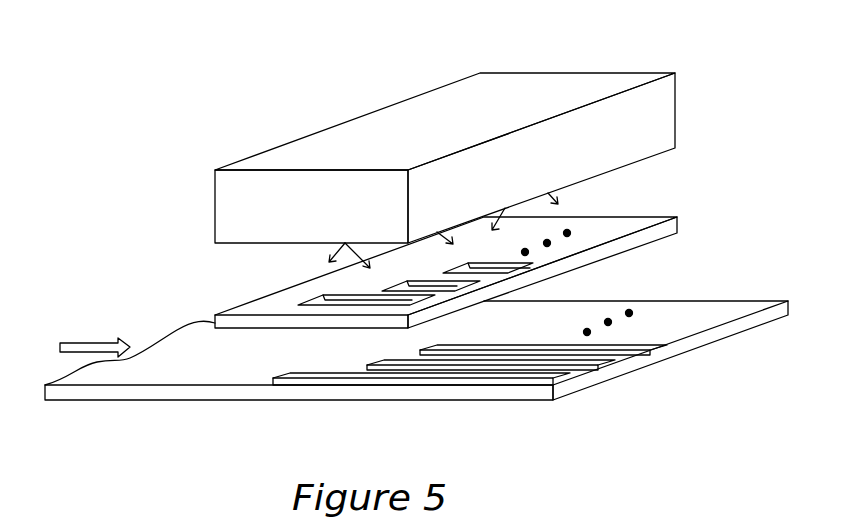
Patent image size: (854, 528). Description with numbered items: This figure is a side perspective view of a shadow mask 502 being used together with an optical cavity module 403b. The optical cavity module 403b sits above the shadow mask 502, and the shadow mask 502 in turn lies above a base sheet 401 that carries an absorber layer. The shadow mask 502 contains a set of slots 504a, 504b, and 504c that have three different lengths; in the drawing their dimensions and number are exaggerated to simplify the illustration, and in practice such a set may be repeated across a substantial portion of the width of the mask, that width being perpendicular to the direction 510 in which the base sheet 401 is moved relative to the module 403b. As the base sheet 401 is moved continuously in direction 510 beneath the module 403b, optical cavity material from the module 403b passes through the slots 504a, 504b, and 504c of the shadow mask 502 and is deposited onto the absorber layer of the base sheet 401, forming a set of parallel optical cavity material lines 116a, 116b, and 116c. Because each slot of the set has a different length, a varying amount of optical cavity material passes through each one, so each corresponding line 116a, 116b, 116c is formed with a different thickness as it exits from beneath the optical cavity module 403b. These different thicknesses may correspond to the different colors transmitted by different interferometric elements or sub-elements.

The optical cavity module 403b is at (215, 210).
The shadow mask 502 is at (253, 303).
The slot 504a is at (332, 298).
The slot 504b is at (430, 285).
The slot 504c is at (500, 268).
The base sheet 401 is at (153, 365).
The direction 510 is at (100, 353).
The optical cavity material line 116a is at (470, 378).
The optical cavity material line 116b is at (573, 362).
The optical cavity material line 116c is at (617, 345).